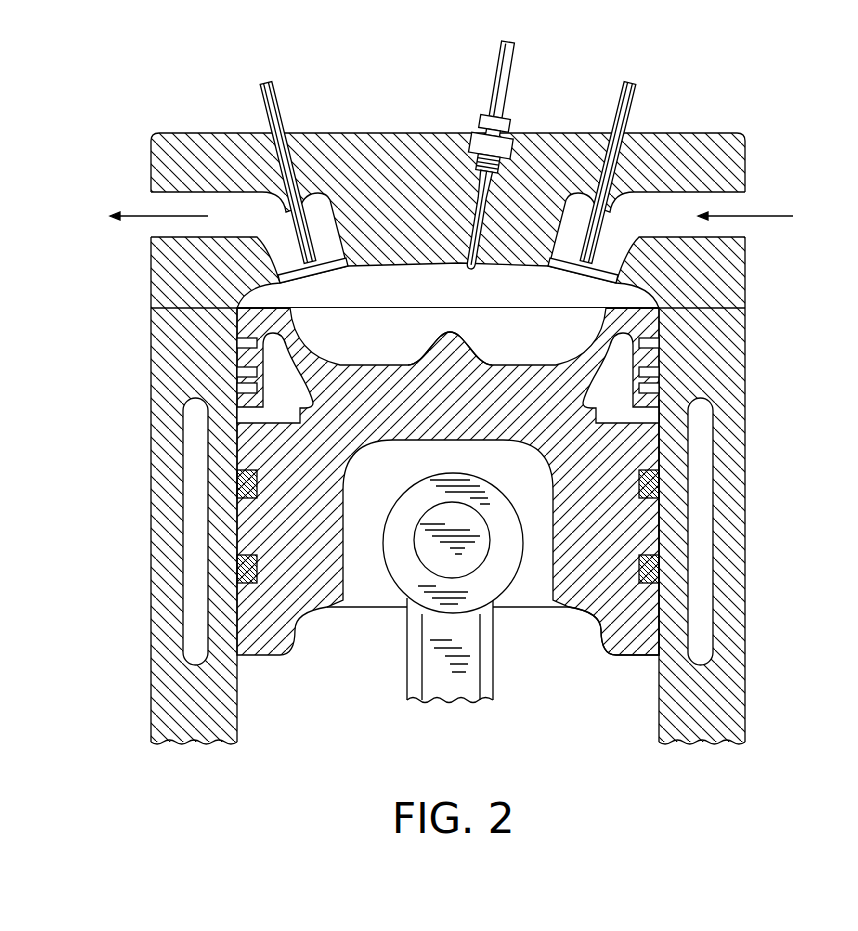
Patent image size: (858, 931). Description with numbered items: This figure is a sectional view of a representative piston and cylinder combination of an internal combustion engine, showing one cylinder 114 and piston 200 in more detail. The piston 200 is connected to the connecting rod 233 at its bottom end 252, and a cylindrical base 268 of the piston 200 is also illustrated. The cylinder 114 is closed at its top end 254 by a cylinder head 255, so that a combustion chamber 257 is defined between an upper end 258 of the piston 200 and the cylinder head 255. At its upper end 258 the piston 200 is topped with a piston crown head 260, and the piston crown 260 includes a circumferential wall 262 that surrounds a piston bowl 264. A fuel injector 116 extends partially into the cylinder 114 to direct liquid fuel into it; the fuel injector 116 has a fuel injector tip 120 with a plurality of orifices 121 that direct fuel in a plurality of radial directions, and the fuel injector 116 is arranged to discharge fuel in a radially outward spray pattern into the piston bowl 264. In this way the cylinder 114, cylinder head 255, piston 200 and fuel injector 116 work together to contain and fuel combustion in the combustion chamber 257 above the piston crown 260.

The cylinder 114 is at (733, 347).
The fuel injector 116 is at (502, 78).
The fuel injector tip 120 is at (463, 272).
The orifices 121 is at (462, 342).
The piston 200 is at (445, 507).
The connecting rod 233 is at (468, 685).
The bottom end 252 is at (455, 443).
The top end 254 is at (192, 307).
The cylinder head 255 is at (180, 153).
The combustion chamber 257 is at (410, 353).
The upper end 258 is at (664, 320).
The piston crown head 260 is at (595, 353).
The circumferential wall 262 is at (283, 358).
The piston bowl 264 is at (283, 383).
The cylindrical base 268 is at (632, 462).